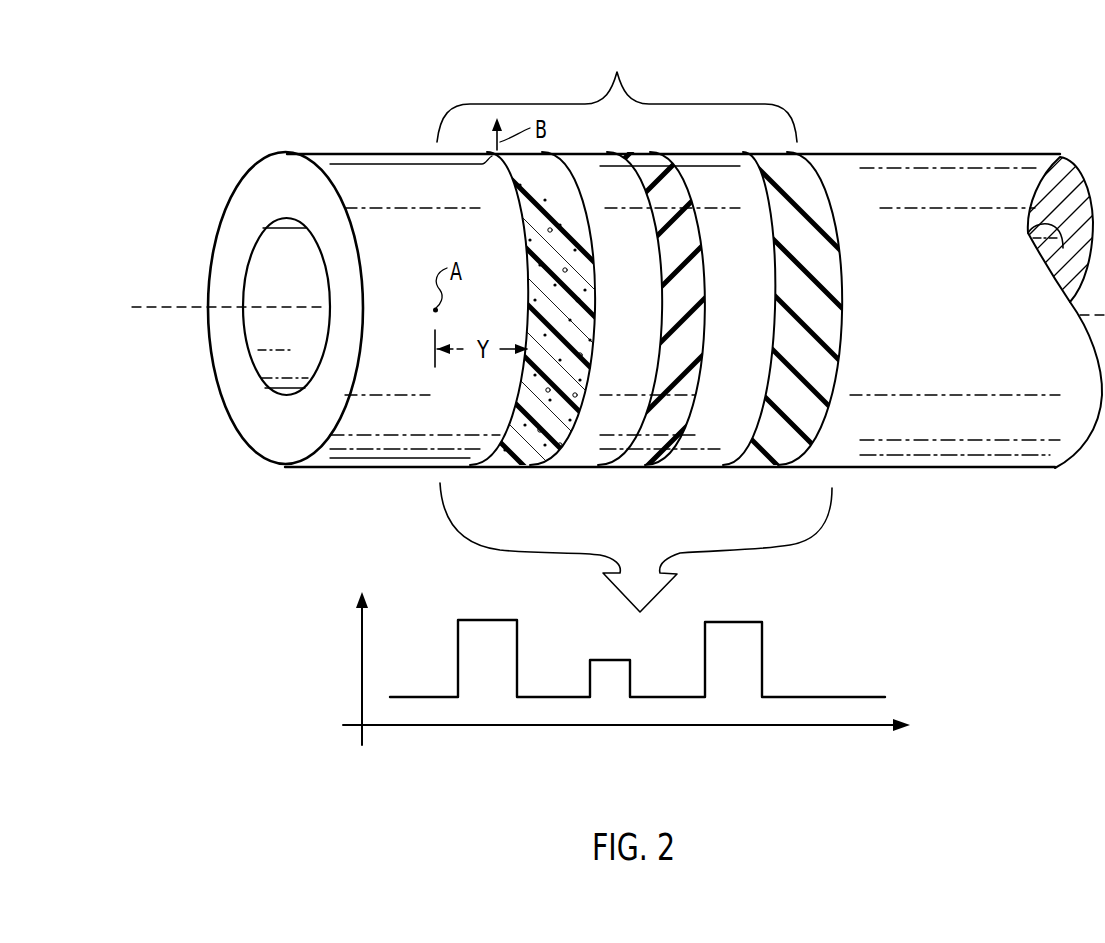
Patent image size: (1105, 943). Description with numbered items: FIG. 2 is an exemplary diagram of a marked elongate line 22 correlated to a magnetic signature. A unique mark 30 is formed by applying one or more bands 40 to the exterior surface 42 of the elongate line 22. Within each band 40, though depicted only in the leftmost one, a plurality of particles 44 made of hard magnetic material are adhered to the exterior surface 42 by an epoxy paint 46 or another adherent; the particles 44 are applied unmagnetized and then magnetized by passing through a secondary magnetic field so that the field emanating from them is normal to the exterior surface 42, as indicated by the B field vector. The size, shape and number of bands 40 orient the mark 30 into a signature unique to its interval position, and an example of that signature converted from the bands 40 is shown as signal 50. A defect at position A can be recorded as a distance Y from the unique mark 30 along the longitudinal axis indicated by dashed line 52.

The elongate line 22 is at (322, 152).
The unique mark 30 is at (634, 321).
The bands 40 is at (505, 468).
The exterior surface 42 is at (968, 187).
The particles 44 is at (545, 193).
The epoxy paint 46 is at (580, 273).
The signal 50 is at (840, 674).
The dashed line 52 is at (604, 308).